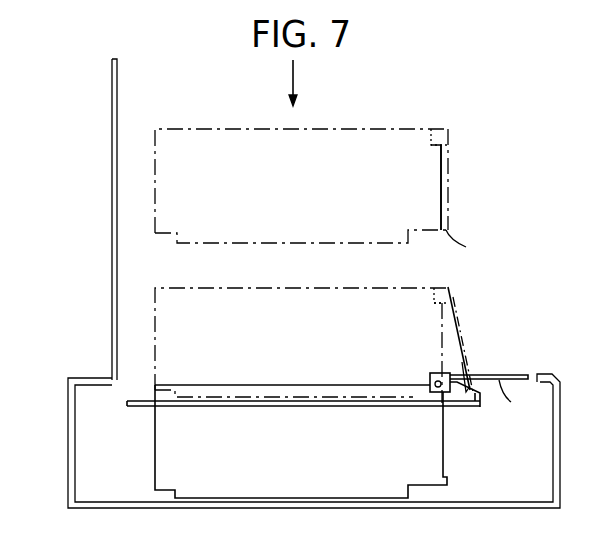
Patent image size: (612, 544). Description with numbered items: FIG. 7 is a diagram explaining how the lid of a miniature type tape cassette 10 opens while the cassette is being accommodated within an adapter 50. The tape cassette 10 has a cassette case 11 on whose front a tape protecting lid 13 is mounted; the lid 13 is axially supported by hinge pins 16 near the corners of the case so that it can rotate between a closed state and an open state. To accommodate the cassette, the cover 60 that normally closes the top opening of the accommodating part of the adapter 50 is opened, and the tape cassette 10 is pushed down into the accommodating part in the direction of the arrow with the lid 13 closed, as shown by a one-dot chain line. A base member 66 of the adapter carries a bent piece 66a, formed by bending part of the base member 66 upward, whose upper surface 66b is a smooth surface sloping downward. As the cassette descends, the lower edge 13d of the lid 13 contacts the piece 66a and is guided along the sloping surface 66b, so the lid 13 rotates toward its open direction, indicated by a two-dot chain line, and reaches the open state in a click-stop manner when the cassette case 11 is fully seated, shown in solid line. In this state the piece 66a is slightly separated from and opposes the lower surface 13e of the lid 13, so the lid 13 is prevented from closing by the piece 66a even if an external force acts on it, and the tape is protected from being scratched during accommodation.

The miniature type tape cassette 10 is at (349, 130).
The cassette case 11 is at (210, 133).
The tape protecting lid 13 is at (449, 193).
The lower edge of the lid 13d is at (498, 413).
The lower surface of the lid 13e is at (524, 398).
The hinge pin 16 is at (438, 133).
The adapter 50 is at (64, 389).
The cover 60 is at (112, 174).
The base member 66 is at (257, 410).
The bent piece 66a is at (473, 400).
The upper surface of the piece 66b is at (466, 368).